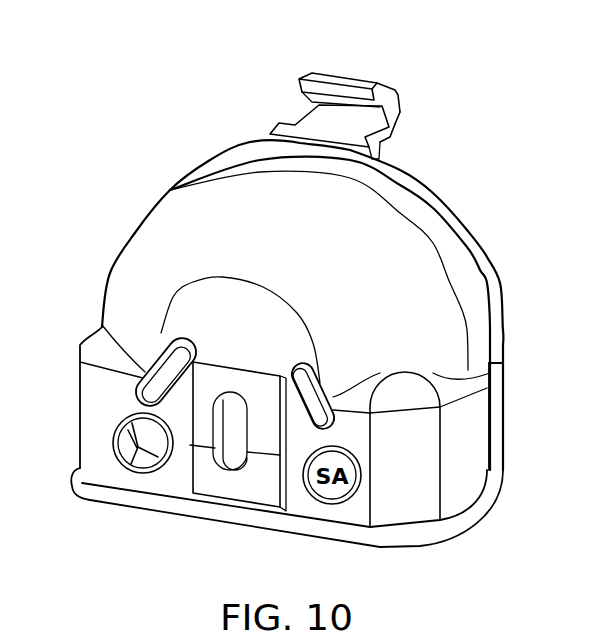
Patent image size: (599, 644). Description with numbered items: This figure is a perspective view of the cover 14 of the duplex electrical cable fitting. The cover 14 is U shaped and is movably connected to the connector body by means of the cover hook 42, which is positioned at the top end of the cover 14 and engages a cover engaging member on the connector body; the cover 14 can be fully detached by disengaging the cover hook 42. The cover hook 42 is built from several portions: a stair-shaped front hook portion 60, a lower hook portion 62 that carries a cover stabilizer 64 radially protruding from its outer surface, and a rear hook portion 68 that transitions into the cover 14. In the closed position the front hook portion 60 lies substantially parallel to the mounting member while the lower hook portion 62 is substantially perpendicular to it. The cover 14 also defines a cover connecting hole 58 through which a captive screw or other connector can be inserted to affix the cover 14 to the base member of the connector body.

The cover 14 is at (192, 217).
The cover hook 42 is at (303, 93).
The cover connecting hole 58 is at (237, 438).
The front hook portion 60 is at (368, 86).
The lower hook portion 62 is at (395, 90).
The cover stabilizer 64 is at (401, 112).
The rear hook portion 68 is at (396, 130).